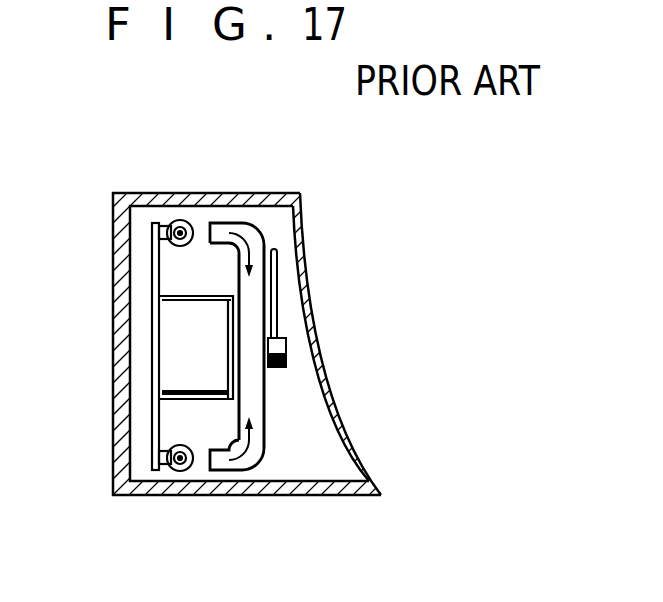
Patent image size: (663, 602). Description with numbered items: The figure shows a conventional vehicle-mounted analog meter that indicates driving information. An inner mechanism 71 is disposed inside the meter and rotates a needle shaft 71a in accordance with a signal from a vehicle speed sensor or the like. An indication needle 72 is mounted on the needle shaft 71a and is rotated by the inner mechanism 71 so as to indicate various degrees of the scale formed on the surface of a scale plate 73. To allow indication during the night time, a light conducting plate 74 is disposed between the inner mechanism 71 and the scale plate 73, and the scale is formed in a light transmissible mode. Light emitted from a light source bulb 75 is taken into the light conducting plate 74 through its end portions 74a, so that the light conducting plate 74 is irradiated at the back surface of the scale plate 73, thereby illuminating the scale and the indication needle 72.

The inner mechanism 71 is at (230, 352).
The needle shaft 71a is at (230, 375).
The indication needle 72 is at (279, 291).
The scale plate 73 is at (266, 427).
The light conducting plate 74 is at (247, 388).
The end portions 74a is at (228, 226).
The light source bulb 75 is at (180, 220).